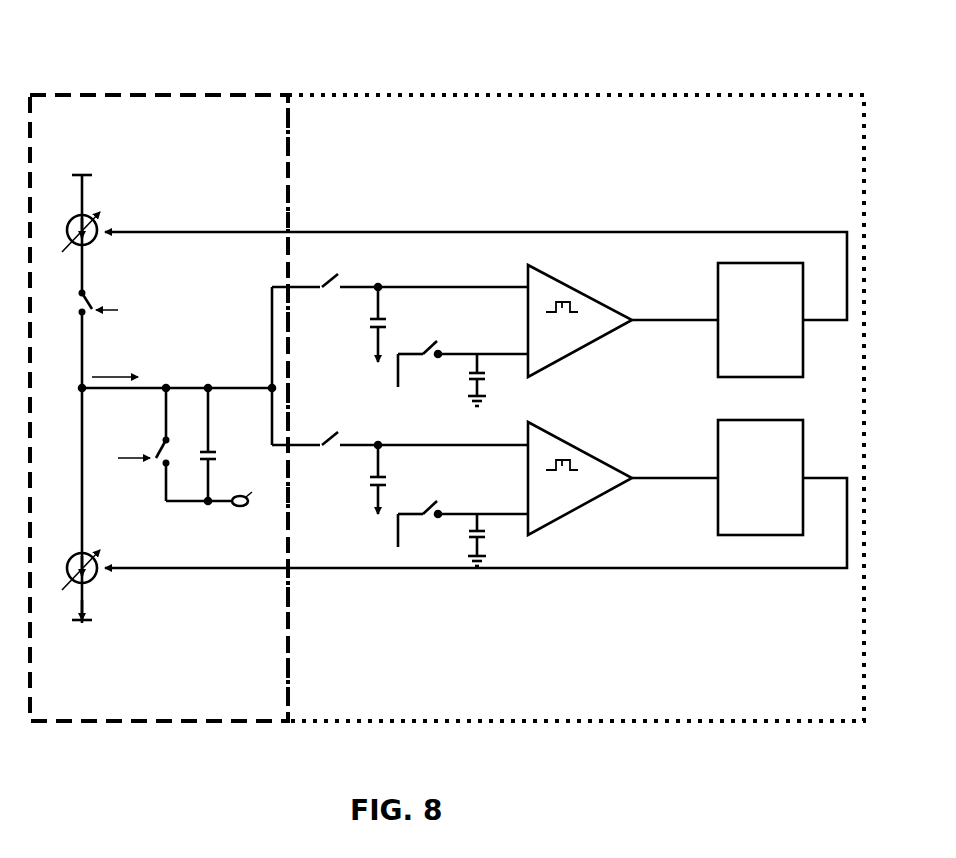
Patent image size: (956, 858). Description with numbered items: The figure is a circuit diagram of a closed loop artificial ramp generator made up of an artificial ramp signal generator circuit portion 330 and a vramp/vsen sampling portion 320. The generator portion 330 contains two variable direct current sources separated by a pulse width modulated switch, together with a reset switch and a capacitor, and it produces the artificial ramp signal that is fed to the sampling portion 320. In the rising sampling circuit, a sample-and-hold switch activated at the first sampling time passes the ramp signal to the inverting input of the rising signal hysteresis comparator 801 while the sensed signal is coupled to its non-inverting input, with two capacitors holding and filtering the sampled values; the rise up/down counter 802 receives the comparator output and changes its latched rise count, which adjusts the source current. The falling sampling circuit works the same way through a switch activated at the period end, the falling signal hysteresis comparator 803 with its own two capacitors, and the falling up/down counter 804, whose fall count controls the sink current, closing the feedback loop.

The artificial ramp signal generator circuit portion 330 is at (168, 95).
The vramp/vsen sampling portion 320 is at (546, 95).
The rising signal hysteresis comparator 801 is at (592, 300).
The rise up/down counter 802 is at (806, 290).
The falling signal hysteresis comparator 803 is at (570, 446).
The falling up/down counter 804 is at (806, 440).